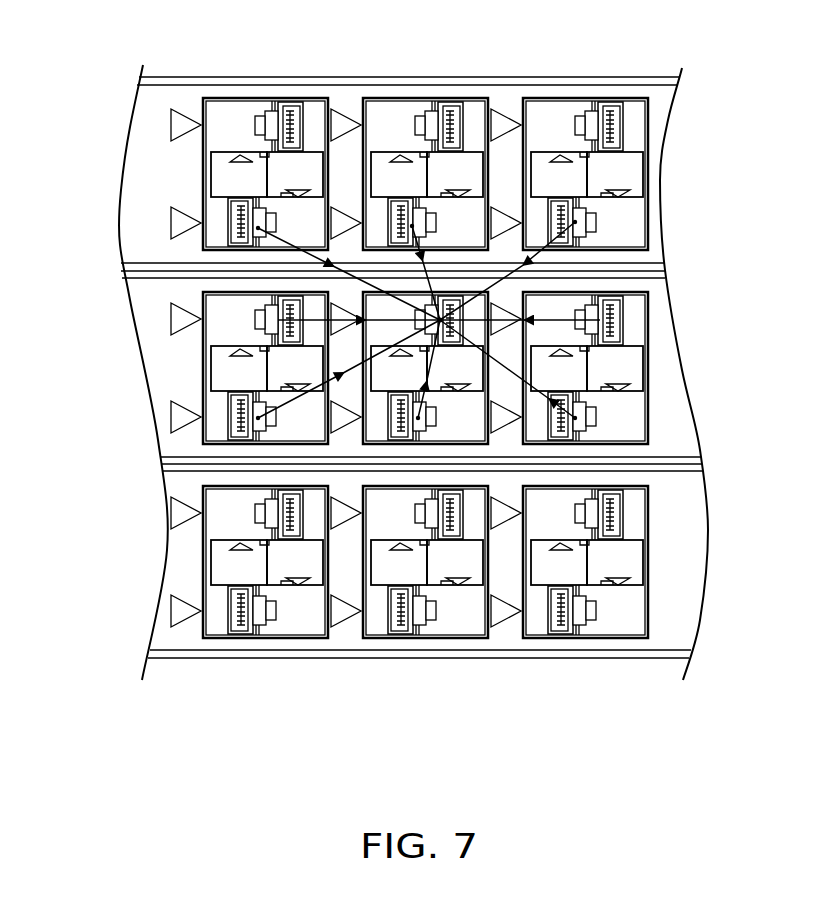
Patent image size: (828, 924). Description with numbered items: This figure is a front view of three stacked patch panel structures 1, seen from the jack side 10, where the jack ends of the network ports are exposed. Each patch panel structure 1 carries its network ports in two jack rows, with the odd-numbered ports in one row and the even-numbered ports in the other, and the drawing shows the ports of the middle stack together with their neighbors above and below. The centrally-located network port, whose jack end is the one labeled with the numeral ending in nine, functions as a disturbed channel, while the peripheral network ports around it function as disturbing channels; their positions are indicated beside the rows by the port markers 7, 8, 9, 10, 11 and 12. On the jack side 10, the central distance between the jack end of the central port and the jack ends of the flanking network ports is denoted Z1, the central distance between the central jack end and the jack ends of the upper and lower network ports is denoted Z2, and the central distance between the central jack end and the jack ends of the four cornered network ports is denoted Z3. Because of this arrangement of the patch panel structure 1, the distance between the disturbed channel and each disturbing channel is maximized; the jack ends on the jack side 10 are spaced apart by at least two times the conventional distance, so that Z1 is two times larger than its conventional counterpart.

The patch panel structure 1 is at (92, 167).
The light emitter 7 is at (186, 319).
The light emitter 8 is at (186, 417).
The light emitter 9 is at (346, 319).
The jack side 10 is at (346, 417).
The light emitter 11 is at (506, 319).
The light emitter 12 is at (506, 417).
The central distance to flanking jack ends Z1 is at (439, 309).
The central distance to upper and lower jack ends Z2 is at (426, 322).
The central distance to cornered jack ends Z3 is at (416, 320).